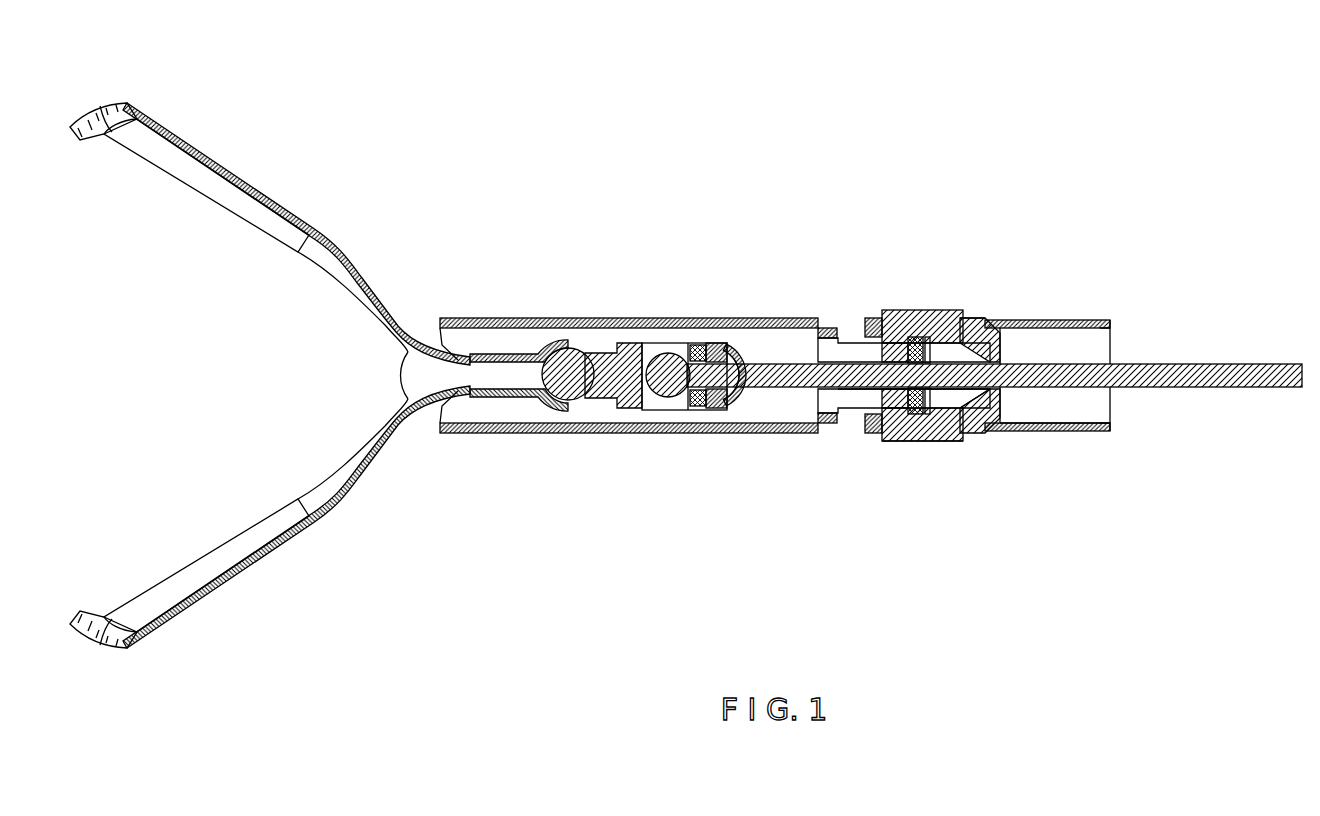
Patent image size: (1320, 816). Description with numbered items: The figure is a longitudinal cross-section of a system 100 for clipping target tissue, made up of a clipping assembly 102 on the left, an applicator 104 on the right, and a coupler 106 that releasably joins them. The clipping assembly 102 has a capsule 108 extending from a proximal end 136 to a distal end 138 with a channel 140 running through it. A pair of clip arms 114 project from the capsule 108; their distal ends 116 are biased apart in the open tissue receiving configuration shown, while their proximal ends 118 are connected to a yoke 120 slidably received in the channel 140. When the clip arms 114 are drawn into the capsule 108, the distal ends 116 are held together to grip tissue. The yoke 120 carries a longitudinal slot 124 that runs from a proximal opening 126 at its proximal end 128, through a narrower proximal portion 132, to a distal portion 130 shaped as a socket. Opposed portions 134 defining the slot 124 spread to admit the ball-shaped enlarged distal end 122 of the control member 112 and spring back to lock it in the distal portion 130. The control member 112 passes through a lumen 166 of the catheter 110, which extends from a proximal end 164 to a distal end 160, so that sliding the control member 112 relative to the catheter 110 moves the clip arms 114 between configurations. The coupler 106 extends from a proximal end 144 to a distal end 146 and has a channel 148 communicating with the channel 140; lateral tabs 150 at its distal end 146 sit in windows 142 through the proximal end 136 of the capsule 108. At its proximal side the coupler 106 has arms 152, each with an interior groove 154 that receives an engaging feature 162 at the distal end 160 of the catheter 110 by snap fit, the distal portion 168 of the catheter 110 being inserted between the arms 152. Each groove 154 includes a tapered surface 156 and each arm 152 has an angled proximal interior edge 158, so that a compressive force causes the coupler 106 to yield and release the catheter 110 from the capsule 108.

The system 100 is at (658, 148).
The clipping assembly 102 is at (420, 150).
The applicator 104 is at (1094, 180).
The coupler 106 is at (927, 302).
The capsule 108 is at (627, 314).
The catheter 110 is at (1098, 314).
The control member 112 is at (1222, 391).
The clip arms 114 is at (258, 187).
The distal ends 116 is at (94, 142).
The proximal ends 118 is at (563, 347).
The yoke 120 is at (600, 388).
The enlarged distal end 122 is at (655, 345).
The longitudinal slot 124 is at (698, 345).
The proximal opening 126 is at (737, 398).
The proximal end 128 is at (730, 352).
The distal portion 130 is at (672, 397).
The proximal portion 132 is at (713, 345).
The opposed portions 134 is at (733, 350).
The proximal end 136 is at (821, 340).
The distal end 138 is at (443, 318).
The channel 140 is at (482, 432).
The window 142 is at (838, 330).
The proximal end 144 is at (968, 320).
The distal end 146 is at (845, 416).
The channel 148 is at (915, 312).
The lateral tabs 150 is at (868, 330).
The arms 152 is at (962, 320).
The groove 154 is at (990, 320).
The tapered surface 156 is at (926, 432).
The proximal interior edge 158 is at (962, 428).
The distal end 160 is at (942, 432).
The engaging feature 162 is at (942, 322).
The proximal end 164 is at (1117, 320).
The lumen 166 is at (1065, 340).
The distal portion 168 is at (1013, 433).